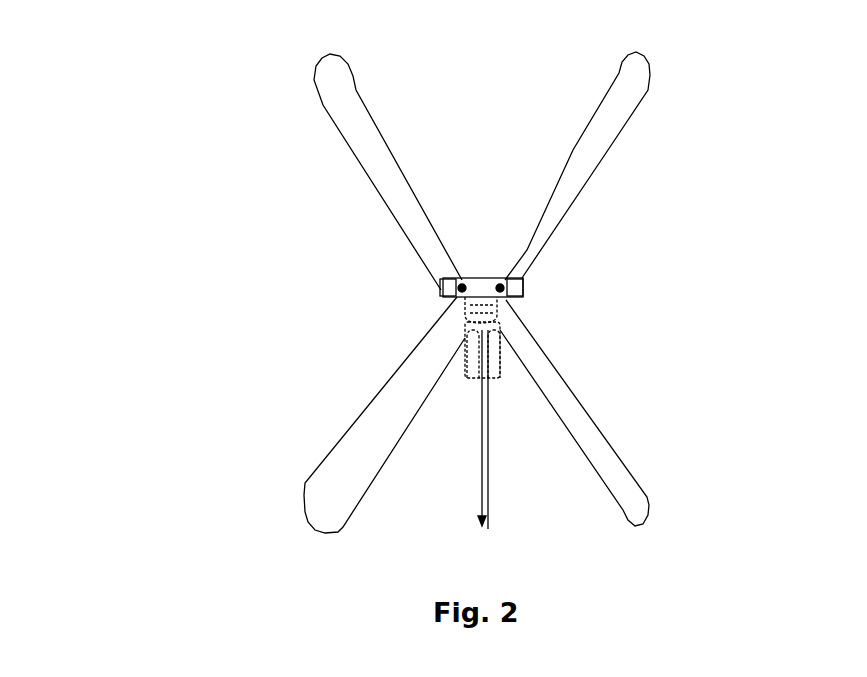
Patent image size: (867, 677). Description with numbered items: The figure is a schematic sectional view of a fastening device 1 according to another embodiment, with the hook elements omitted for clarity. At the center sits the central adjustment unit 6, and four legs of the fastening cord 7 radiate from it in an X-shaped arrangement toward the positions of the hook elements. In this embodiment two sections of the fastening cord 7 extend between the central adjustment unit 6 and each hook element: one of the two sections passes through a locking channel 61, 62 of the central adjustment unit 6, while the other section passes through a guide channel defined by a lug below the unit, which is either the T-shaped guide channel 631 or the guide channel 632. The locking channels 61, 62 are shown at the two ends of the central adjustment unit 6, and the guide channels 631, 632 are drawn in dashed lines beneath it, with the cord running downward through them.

The fastening device 1 is at (427, 292).
The central adjustment unit 6 is at (482, 207).
The fastening cord 7 is at (646, 166).
The locking channel 61 is at (374, 265).
The locking channel 62 is at (589, 244).
The T-shaped guide channel 631 is at (385, 416).
The guide channel 632 is at (584, 320).